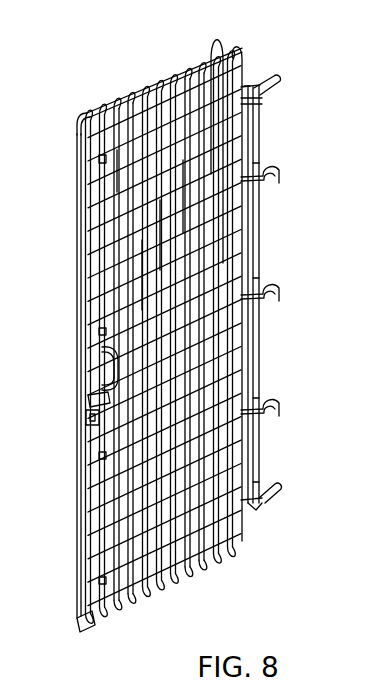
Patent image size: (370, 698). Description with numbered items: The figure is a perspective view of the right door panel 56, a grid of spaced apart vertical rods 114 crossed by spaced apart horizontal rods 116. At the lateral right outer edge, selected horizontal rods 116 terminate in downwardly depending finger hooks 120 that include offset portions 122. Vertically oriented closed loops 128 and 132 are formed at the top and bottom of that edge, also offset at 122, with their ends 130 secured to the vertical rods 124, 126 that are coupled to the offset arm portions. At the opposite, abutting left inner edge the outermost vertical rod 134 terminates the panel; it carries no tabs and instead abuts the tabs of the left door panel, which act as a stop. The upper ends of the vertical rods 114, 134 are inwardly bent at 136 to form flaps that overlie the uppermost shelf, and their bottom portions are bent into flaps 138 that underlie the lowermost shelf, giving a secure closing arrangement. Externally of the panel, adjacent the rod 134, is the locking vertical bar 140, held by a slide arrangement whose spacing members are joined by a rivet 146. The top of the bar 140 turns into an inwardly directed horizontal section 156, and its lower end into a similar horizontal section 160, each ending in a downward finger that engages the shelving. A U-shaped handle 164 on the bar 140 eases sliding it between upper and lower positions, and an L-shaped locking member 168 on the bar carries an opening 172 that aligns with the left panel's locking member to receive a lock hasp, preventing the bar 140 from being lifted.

The right door panel 56 is at (190, 323).
The vertical rods 114 is at (62, 188).
The horizontal rods 116 is at (254, 561).
The finger hooks 120 is at (280, 168).
The offset portions 122 is at (249, 86).
The vertical rod 124 is at (259, 318).
The vertical rod 126 is at (250, 347).
The closed loop 128 is at (270, 80).
The ends 130 is at (262, 100).
The closed loop 132 is at (277, 487).
The outermost vertical rod 134 is at (84, 226).
The inwardly bent flaps 136 is at (116, 94).
The flaps 138 is at (180, 591).
The vertical bar 140 is at (103, 248).
The rivet 146 is at (100, 158).
The inwardly directed horizontal section 156 is at (93, 107).
The inwardly directed horizontal section 160 is at (88, 613).
The U-shaped handle 164 is at (108, 357).
The L-shaped locking member 168 is at (98, 400).
The opening 172 is at (90, 420).